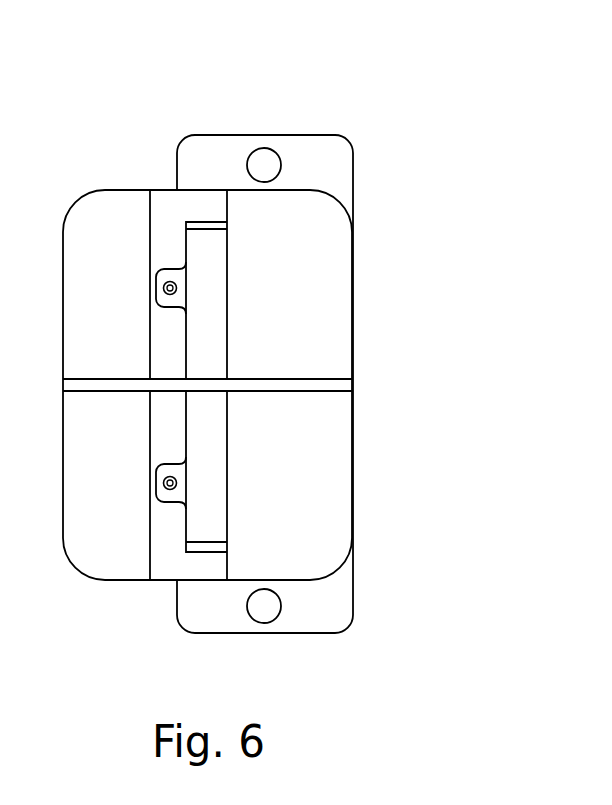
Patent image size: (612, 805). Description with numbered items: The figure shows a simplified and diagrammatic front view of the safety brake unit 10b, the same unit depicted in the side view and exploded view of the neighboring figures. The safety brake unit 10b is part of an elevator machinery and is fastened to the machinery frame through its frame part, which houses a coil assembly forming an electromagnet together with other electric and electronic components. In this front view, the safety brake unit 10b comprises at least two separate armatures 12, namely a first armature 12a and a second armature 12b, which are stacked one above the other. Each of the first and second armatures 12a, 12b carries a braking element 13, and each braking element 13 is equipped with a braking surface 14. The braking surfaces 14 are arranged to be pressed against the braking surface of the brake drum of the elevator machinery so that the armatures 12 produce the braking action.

The safety brake unit 10b is at (294, 93).
The armatures 12 is at (123, 615).
The first armature 12a is at (338, 276).
The second armature 12b is at (340, 499).
The braking element 13 is at (222, 226).
The braking surface 14 is at (218, 352).